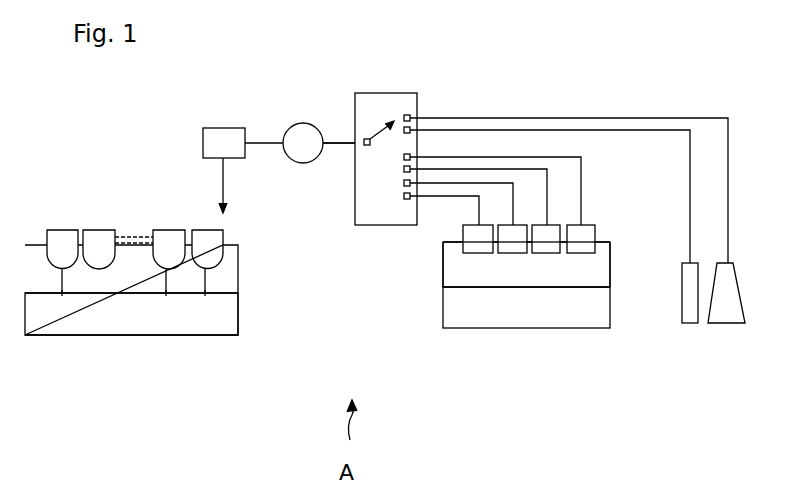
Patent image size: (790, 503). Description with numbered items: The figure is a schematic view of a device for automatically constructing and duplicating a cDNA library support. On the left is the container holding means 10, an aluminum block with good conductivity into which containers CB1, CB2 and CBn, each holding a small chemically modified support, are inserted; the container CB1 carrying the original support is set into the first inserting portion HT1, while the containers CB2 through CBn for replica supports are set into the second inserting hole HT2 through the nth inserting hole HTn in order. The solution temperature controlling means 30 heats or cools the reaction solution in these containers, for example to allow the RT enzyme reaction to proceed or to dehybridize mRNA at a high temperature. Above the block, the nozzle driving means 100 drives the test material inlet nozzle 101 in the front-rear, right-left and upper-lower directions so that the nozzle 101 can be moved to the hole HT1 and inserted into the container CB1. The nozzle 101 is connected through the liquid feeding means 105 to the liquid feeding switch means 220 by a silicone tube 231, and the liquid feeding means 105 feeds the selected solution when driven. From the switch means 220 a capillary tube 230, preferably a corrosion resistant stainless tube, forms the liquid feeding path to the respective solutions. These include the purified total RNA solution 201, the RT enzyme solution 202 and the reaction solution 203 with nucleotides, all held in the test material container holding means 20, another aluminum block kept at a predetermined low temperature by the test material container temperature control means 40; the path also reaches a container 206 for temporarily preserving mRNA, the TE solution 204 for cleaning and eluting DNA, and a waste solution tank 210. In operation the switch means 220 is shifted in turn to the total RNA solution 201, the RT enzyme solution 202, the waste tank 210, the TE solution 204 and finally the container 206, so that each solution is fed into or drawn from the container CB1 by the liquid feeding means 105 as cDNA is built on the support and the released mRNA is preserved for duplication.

The container holding means 10 is at (230, 275).
The solution temperature controlling means 30 is at (88, 332).
The test material container holding means 20 is at (443, 250).
The test material container temperature control means 40 is at (480, 324).
The nozzle driving means 100 is at (222, 132).
The test material inlet nozzle 101 is at (224, 192).
The liquid feeding means 105 is at (305, 135).
The liquid feeding switch means 220 is at (388, 92).
The silicone tube 231 is at (335, 146).
The capillary tube 230 is at (592, 104).
The purified total RNA solution 201 is at (473, 246).
The RT enzyme solution 202 is at (512, 246).
The reaction solution 203 is at (546, 246).
The container for temporarily preserving mRNA 206 is at (585, 246).
The TE solution 204 is at (692, 321).
The waste solution tank 210 is at (730, 318).
The container CBn is at (62, 240).
The container CB2 is at (162, 238).
The container CB1 is at (203, 237).
The inserting hole HTn is at (54, 306).
The inserting hole HT2 is at (157, 306).
The inserting portion HT1 is at (207, 306).